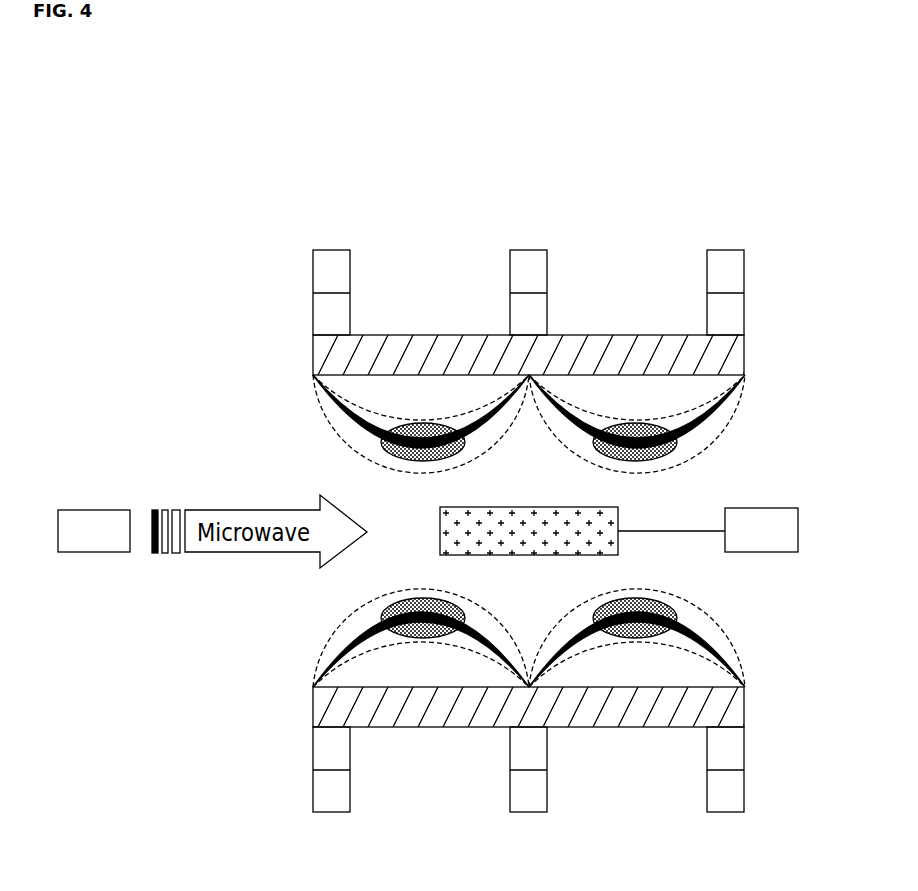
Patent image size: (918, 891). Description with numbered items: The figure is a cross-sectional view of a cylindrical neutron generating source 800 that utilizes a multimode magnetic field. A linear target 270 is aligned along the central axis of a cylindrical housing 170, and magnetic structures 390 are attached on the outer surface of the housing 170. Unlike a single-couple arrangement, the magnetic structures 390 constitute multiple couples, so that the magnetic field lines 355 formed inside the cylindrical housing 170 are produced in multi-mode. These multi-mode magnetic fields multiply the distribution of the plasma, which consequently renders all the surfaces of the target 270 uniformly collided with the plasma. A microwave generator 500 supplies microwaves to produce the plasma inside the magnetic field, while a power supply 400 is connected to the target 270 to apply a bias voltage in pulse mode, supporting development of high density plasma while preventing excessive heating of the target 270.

The cylindrical neutron generating source 800 is at (236, 71).
The magnetic structures 390 is at (313, 250).
The cylindrical housing 170 is at (737, 353).
The linear target 270 is at (614, 521).
The magnetic field lines 355 is at (712, 622).
The microwave generator 500 is at (94, 531).
The power supply 400 is at (708, 530).